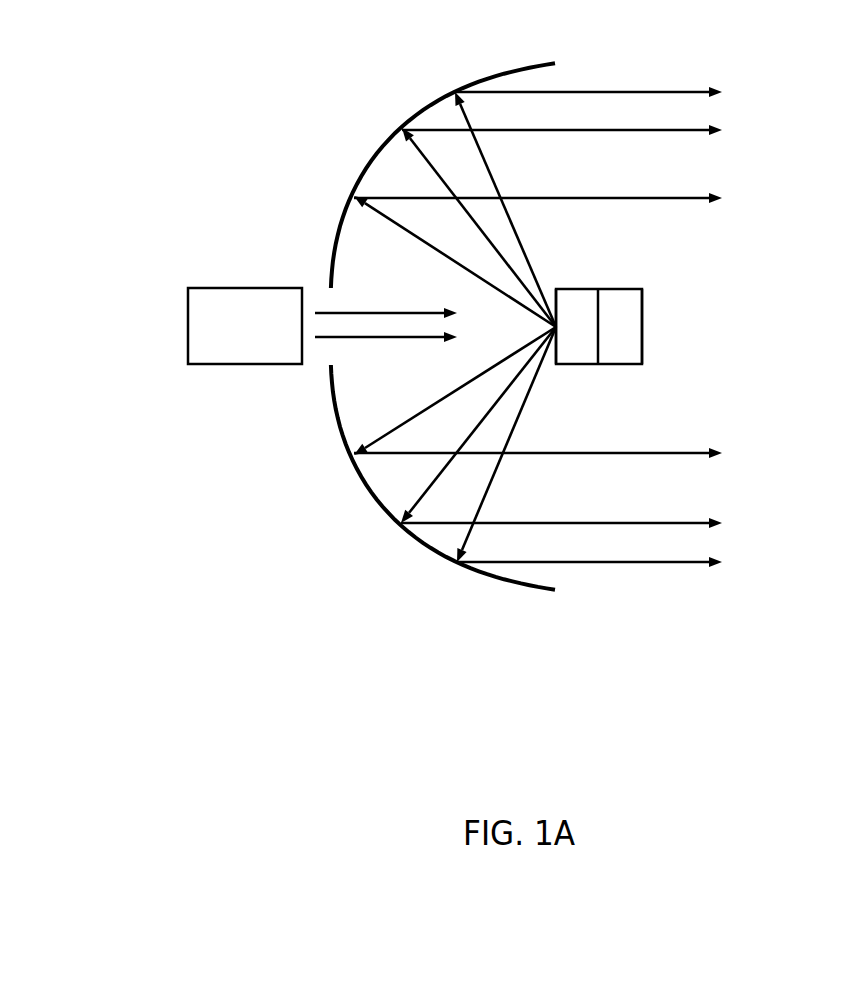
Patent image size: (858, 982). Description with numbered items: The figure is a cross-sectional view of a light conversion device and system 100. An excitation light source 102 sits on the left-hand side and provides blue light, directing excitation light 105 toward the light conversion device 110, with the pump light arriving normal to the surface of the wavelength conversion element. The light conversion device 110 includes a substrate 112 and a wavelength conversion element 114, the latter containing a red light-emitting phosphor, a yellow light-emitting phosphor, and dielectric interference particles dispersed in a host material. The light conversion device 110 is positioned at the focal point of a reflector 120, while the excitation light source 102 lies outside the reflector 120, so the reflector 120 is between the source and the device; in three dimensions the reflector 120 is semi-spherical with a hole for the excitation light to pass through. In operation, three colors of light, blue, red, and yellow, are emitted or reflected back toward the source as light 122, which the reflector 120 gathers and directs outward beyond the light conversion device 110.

The light conversion device and system 100 is at (73, 80).
The excitation light source 102 is at (277, 335).
The excitation light 105 is at (386, 308).
The light conversion device 110 is at (689, 352).
The substrate 112 is at (643, 338).
The wavelength conversion element 114 is at (572, 365).
The reflector 120 is at (378, 498).
The emitted or reflected light 122 is at (570, 327).